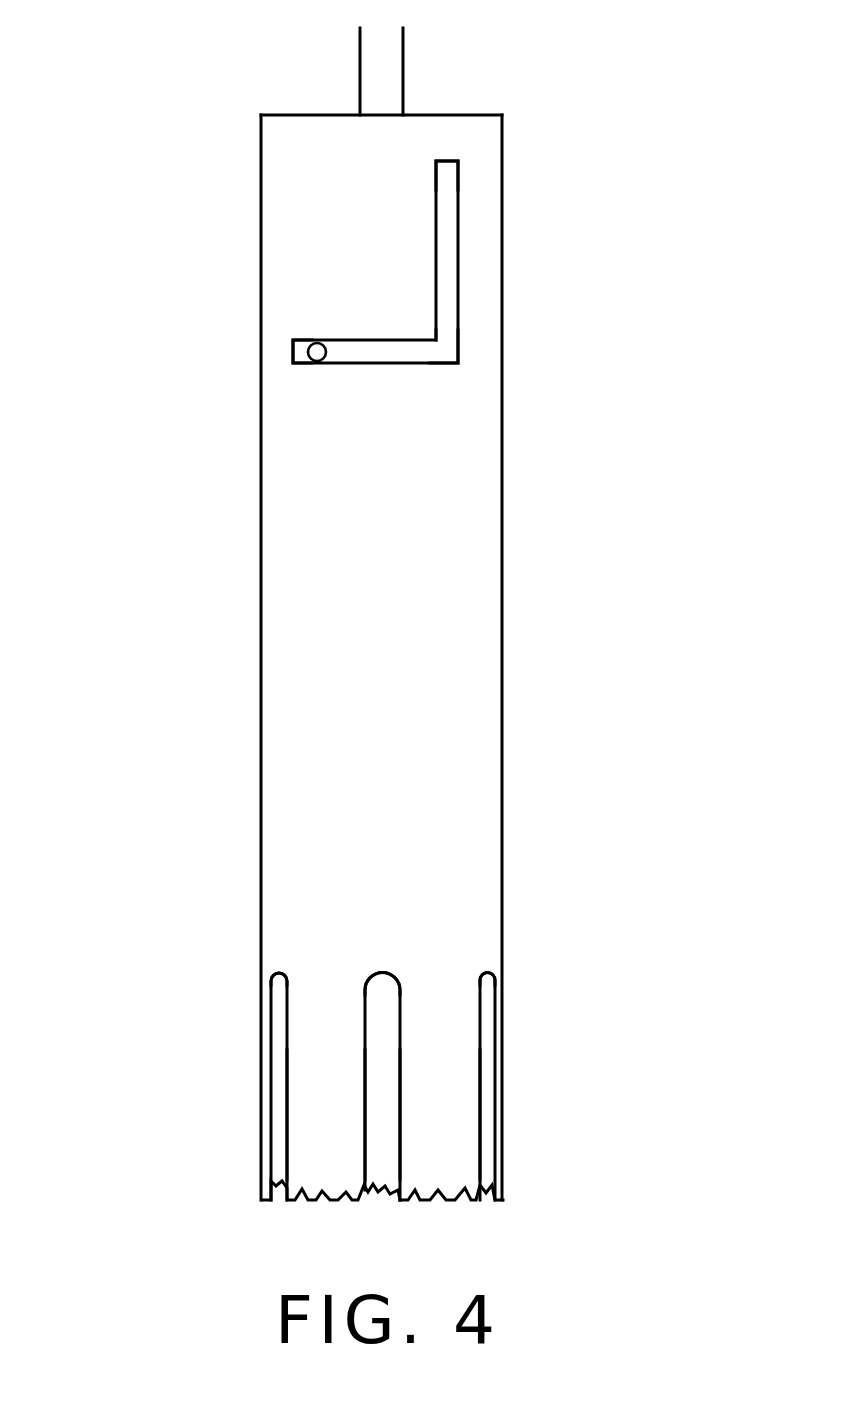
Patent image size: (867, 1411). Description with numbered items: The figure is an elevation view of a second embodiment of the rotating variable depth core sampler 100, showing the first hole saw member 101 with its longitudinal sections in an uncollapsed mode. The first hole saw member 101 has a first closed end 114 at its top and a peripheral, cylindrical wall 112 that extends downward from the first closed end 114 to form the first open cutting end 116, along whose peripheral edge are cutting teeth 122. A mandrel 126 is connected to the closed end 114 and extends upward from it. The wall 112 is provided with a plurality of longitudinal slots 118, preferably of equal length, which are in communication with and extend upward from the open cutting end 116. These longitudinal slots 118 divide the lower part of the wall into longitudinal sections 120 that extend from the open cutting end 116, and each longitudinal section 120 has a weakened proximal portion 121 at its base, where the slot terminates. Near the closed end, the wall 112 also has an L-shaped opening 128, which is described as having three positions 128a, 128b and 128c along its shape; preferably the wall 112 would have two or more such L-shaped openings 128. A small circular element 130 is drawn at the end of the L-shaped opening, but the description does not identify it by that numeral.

The rotating variable depth core sampler 100 is at (583, 132).
The first hole saw member 101 is at (207, 676).
The peripheral, cylindrical wall 112 is at (469, 552).
The first closed end 114 is at (290, 113).
The first open cutting end 116 is at (327, 1196).
The longitudinal slots 118 is at (488, 1002).
The longitudinal sections 120 is at (337, 1118).
The weakened proximal portions 121 is at (327, 982).
The cutting teeth 122 is at (455, 1198).
The mandrel 126 is at (404, 72).
The L-shaped opening 128 is at (452, 278).
The position of L-shaped opening 128a is at (300, 355).
The position of L-shaped opening 128b is at (448, 355).
The position of L-shaped opening 128c is at (450, 173).
The pin 130 is at (311, 345).